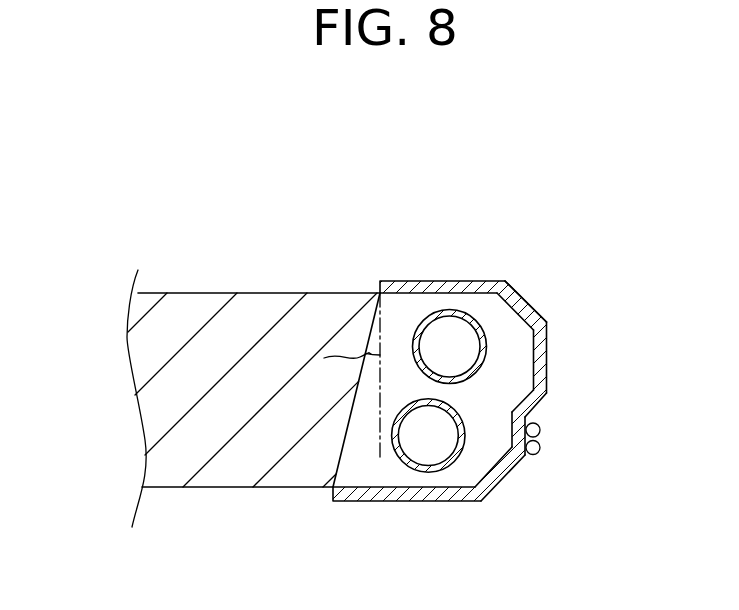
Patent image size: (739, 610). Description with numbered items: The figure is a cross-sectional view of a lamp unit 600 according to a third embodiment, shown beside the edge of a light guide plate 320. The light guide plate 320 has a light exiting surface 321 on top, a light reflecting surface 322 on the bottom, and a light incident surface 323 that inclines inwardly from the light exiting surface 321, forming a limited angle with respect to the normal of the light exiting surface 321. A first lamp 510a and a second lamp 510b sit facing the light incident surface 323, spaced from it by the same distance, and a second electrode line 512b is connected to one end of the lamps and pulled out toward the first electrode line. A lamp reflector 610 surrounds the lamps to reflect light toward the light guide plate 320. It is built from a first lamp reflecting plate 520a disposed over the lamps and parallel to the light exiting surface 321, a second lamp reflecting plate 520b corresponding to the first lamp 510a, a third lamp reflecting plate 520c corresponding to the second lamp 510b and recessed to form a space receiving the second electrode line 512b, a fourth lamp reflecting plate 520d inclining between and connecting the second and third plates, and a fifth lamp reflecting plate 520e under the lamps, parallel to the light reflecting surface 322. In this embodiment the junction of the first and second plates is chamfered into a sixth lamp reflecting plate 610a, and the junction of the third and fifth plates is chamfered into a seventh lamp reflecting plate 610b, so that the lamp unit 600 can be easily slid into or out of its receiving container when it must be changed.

The light guide plate 320 is at (150, 378).
The light exiting surface 321 is at (255, 293).
The light reflecting surface 322 is at (240, 487).
The light incident surface 323 is at (345, 440).
The lamp unit 600 is at (523, 248).
The lamp reflector 610 is at (522, 293).
The sixth lamp reflecting plate 610a is at (531, 306).
The seventh lamp reflecting plate 610b is at (503, 478).
The first lamp reflecting plate 520a is at (430, 281).
The second lamp reflecting plate 520b is at (547, 333).
The third lamp reflecting plate 520c is at (529, 457).
The fourth lamp reflecting plate 520d is at (536, 405).
The fifth lamp reflecting plate 520e is at (422, 493).
The first lamp 510a is at (485, 358).
The second lamp 510b is at (453, 463).
The second electrode line 512b is at (540, 447).